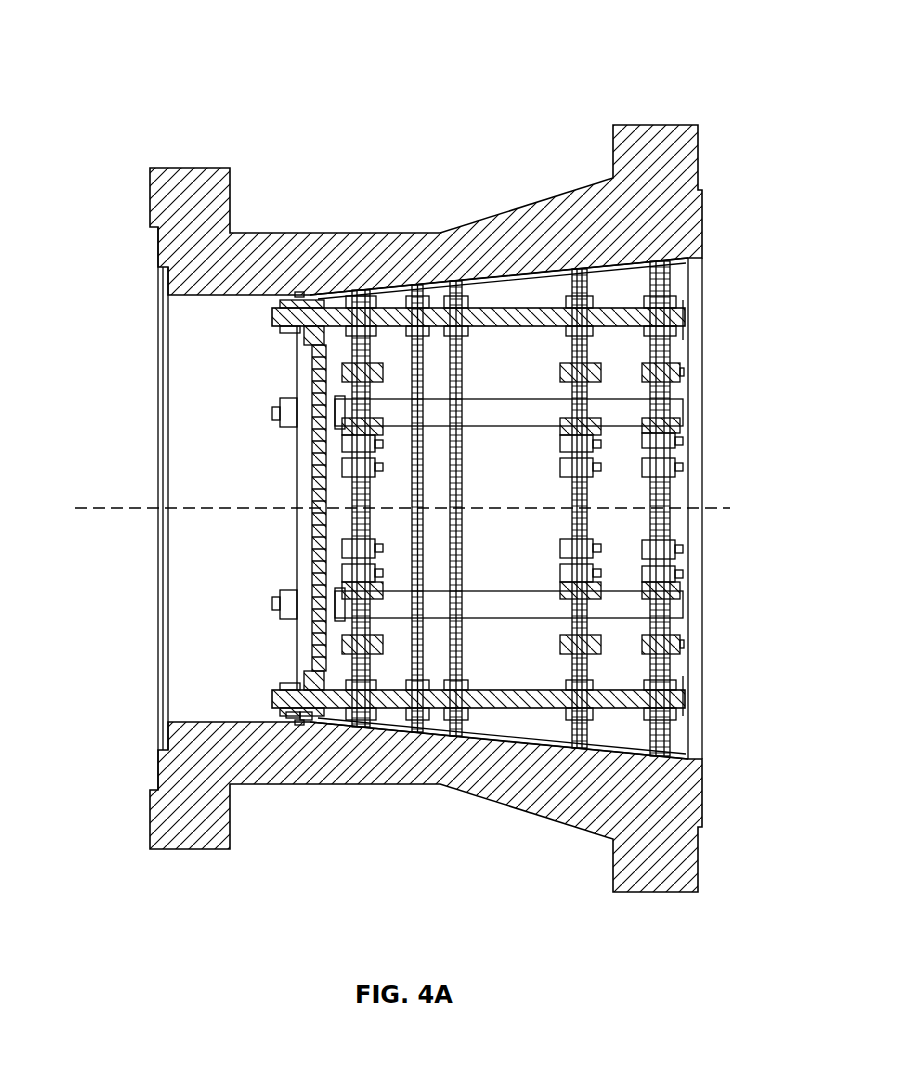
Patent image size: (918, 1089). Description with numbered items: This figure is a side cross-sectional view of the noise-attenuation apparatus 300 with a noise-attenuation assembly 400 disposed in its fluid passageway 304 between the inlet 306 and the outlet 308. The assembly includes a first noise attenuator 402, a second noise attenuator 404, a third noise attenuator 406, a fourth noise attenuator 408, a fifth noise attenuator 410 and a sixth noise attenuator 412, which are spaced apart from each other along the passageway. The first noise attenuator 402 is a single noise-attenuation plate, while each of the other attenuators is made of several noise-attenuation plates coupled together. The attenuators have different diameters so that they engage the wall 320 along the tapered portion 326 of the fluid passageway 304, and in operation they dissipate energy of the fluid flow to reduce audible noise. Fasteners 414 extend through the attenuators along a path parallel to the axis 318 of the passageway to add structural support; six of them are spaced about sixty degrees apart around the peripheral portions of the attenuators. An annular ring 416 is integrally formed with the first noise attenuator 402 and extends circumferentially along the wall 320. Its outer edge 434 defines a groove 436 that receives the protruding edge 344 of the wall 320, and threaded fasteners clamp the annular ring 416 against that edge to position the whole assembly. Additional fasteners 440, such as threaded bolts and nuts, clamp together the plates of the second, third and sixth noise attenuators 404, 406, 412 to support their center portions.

The noise-attenuation apparatus 300 is at (691, 43).
The fluid passageway 304 is at (520, 672).
The inlet 306 is at (104, 529).
The outlet 308 is at (731, 523).
The axis 318 is at (88, 508).
The wall 320 is at (267, 293).
The tapered portion 326 is at (545, 273).
The protruding edge 344 is at (308, 719).
The noise-attenuation assembly 400 is at (716, 740).
The first noise attenuator 402 is at (315, 336).
The second noise attenuator 404 is at (668, 280).
The third noise attenuator 406 is at (357, 300).
The fourth noise attenuator 408 is at (424, 287).
The fifth noise attenuator 410 is at (455, 285).
The sixth noise attenuator 412 is at (577, 271).
The fasteners 414 is at (625, 600).
The annular ring 416 is at (320, 299).
The outer edge 434 is at (303, 717).
The groove 436 is at (305, 718).
The fasteners 440 is at (680, 372).